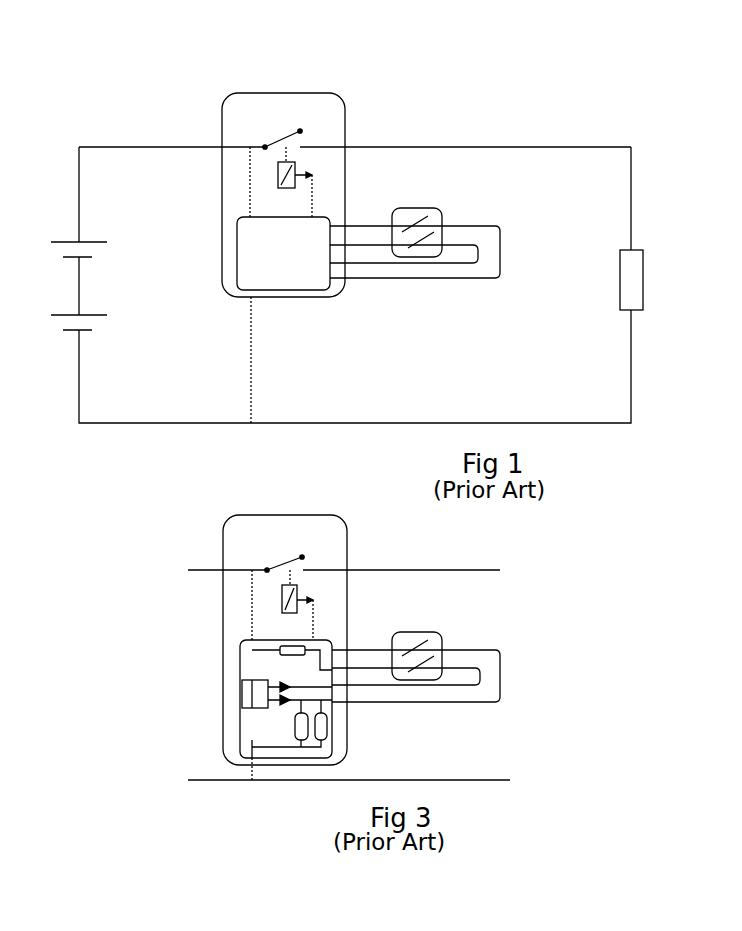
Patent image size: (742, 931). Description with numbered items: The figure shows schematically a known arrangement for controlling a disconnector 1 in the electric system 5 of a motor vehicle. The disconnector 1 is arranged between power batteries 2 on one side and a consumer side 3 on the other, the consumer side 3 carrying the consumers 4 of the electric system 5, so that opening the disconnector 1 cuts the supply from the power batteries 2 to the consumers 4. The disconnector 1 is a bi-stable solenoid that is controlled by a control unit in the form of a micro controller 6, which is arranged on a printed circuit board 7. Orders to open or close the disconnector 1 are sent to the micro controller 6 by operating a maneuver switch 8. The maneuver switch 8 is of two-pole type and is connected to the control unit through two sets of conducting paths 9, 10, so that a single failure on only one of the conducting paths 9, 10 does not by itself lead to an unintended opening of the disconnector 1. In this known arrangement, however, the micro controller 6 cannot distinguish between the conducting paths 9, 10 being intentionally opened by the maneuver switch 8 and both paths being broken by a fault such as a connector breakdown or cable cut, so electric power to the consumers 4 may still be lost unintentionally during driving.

In FIG. 1, the disconnector 1 is at (268, 145).
In FIG. 3, the disconnector 1 is at (270, 568).
In FIG. 1, the power batteries 2 is at (92, 240).
In FIG. 1, the consumer side 3 is at (443, 147).
In FIG. 1, the consumers 4 is at (643, 287).
In FIG. 1, the electric system 5 is at (563, 147).
In FIG. 3, the micro controller 6 is at (252, 692).
In FIG. 1, the printed circuit board 7 is at (330, 288).
In FIG. 3, the printed circuit board 7 is at (333, 645).
In FIG. 1, the maneuver switch 8 is at (425, 208).
In FIG. 3, the maneuver switch 8 is at (428, 632).
In FIG. 1, the conducting path 9 is at (350, 226).
In FIG. 1, the conducting path 10 is at (375, 245).